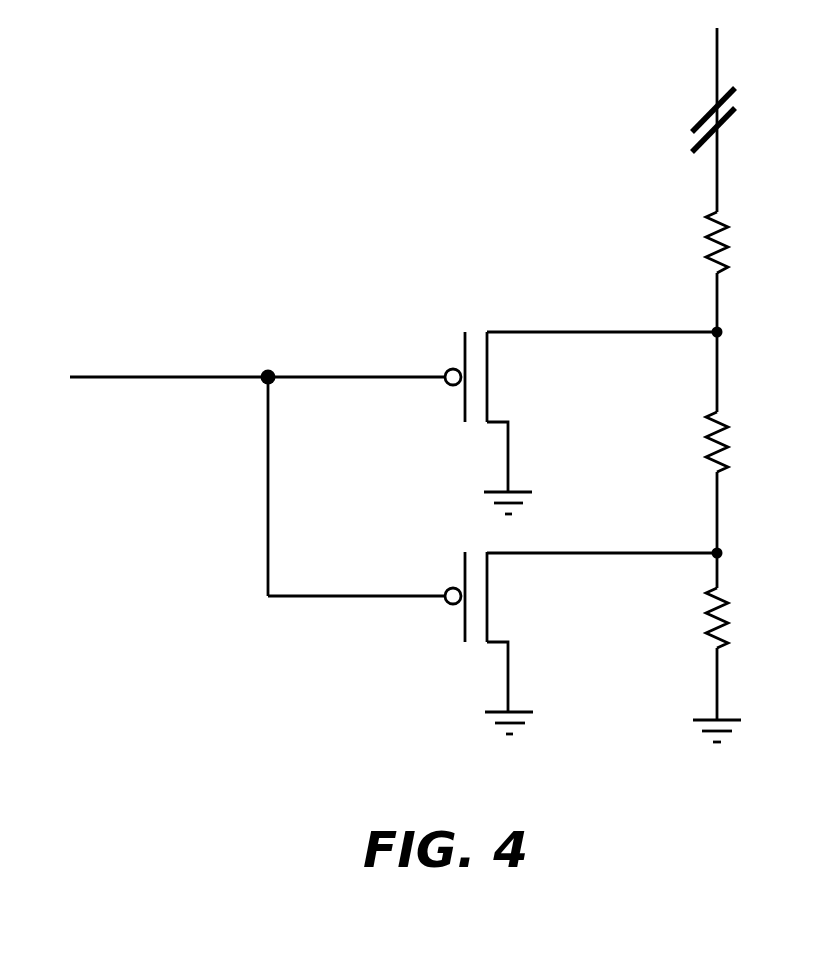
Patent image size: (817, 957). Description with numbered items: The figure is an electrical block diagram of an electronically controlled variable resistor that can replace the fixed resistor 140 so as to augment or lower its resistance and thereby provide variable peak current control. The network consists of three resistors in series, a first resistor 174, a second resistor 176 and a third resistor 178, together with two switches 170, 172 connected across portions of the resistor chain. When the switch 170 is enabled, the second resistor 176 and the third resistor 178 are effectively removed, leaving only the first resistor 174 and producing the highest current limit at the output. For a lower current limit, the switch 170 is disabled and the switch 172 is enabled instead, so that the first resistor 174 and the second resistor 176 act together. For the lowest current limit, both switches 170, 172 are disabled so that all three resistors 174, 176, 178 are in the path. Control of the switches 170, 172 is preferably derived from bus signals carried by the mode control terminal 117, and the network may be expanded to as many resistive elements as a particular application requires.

The mode control terminal 117 is at (157, 377).
The resistor 140 is at (270, 741).
The switch 170 is at (463, 345).
The switch 172 is at (463, 565).
The resistor R3A 174 is at (721, 222).
The resistor R3B 176 is at (722, 425).
The resistor R3C 178 is at (722, 600).